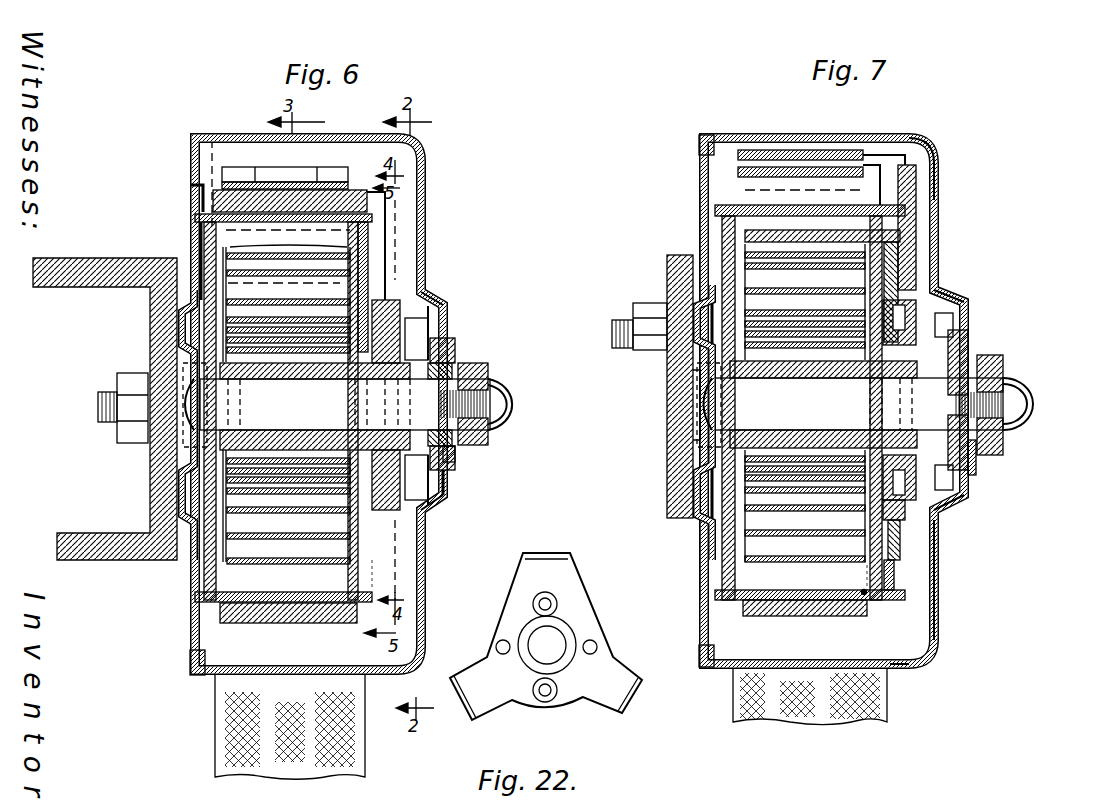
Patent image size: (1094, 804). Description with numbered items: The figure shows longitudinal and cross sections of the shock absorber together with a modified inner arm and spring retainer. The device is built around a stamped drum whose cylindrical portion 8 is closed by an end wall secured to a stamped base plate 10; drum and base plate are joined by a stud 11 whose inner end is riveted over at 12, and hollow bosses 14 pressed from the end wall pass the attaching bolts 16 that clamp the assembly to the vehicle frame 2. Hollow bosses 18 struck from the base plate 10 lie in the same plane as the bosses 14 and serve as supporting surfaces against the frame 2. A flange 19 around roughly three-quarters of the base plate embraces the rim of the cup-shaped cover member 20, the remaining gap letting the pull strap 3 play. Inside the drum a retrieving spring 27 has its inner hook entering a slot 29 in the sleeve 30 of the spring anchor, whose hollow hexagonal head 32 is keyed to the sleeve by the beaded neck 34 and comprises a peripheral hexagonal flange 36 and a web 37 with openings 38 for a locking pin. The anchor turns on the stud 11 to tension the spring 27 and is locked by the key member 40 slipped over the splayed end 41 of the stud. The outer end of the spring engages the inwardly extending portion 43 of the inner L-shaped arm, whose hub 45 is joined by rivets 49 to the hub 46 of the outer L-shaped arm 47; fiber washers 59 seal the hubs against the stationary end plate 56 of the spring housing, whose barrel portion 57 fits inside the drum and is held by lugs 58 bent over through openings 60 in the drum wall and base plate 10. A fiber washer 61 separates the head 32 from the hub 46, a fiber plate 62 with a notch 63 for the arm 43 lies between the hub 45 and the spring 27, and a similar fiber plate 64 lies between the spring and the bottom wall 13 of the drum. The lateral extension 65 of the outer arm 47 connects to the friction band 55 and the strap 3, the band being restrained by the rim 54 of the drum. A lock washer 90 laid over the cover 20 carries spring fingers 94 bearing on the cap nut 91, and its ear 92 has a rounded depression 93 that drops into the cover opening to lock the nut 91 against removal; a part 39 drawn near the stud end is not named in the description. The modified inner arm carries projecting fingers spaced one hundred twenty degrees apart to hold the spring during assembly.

In FIG. 6, the vehicle frame 2 is at (75, 287).
In FIG. 7, the vehicle frame 2 is at (672, 455).
In FIG. 6, the pull strap 3 is at (215, 725).
In FIG. 7, the pull strap 3 is at (805, 722).
In FIG. 7, the cylindrical portion 8 is at (907, 641).
In FIG. 6, the base plate 10 is at (186, 645).
In FIG. 7, the base plate 10 is at (705, 645).
In FIG. 6, the stud 11 is at (315, 406).
In FIG. 7, the stud 11 is at (823, 404).
In FIG. 6, the riveted-over end 12 is at (186, 372).
In FIG. 7, the riveted-over end 12 is at (703, 412).
In FIG. 6, the bottom wall 13 is at (205, 560).
In FIG. 7, the bottom wall 13 is at (720, 243).
In FIG. 6, the bosses 14 is at (186, 445).
In FIG. 7, the bosses 14 is at (710, 395).
In FIG. 6, the attaching bolts 16 is at (98, 405).
In FIG. 7, the attaching bolts 16 is at (612, 343).
In FIG. 6, the hollow bosses 18 is at (183, 320).
In FIG. 7, the hollow bosses 18 is at (700, 493).
In FIG. 6, the flange 19 is at (200, 675).
In FIG. 7, the flange 19 is at (722, 135).
In FIG. 7, the cover member 20 is at (885, 162).
In FIG. 6, the retrieving spring 27 is at (292, 548).
In FIG. 7, the retrieving spring 27 is at (912, 275).
In FIG. 7, the slot 29 is at (705, 383).
In FIG. 6, the sleeve 30 is at (283, 388).
In FIG. 7, the sleeve 30 is at (806, 383).
In FIG. 7, the hollow hexagonal head 32 is at (968, 315).
In FIG. 6, the beaded neck 34 is at (490, 365).
In FIG. 6, the peripheral hexagonal flange 36 is at (430, 330).
In FIG. 6, the web portion 37 is at (474, 399).
In FIG. 6, the openings 38 is at (400, 340).
In FIG. 6, the casing boss 39 is at (432, 508).
In FIG. 6, the key member 40 is at (492, 380).
In FIG. 7, the key member 40 is at (990, 350).
In FIG. 6, the splayed end 41 is at (490, 416).
In FIG. 7, the splayed end 41 is at (1005, 405).
In FIG. 7, the inwardly extending portion 43 is at (720, 232).
In FIG. 22, the inwardly extending portion 43 is at (540, 552).
In FIG. 7, the central hub 45 is at (945, 513).
In FIG. 7, the hub 46 is at (920, 527).
In FIG. 7, the outer L-shaped arm 47 is at (918, 182).
In FIG. 7, the rivets 49 is at (962, 492).
In FIG. 7, the flange or rim 54 is at (938, 610).
In FIG. 6, the friction band 55 is at (278, 623).
In FIG. 7, the friction band 55 is at (905, 590).
In FIG. 7, the end plate 56 is at (905, 565).
In FIG. 7, the barrel portion 57 is at (908, 664).
In FIG. 6, the lugs 58 is at (198, 217).
In FIG. 7, the fiber washers 59 is at (905, 245).
In FIG. 6, the openings 60 is at (196, 192).
In FIG. 6, the fiber washer 61 is at (420, 300).
In FIG. 7, the fiber washer 61 is at (965, 296).
In FIG. 6, the fiber plate 62 is at (372, 573).
In FIG. 7, the fiber plate 62 is at (870, 575).
In FIG. 7, the notch 63 is at (918, 212).
In FIG. 6, the fiber plate 64 is at (205, 240).
In FIG. 7, the fiber plate 64 is at (722, 538).
In FIG. 6, the lateral extension 65 is at (378, 196).
In FIG. 7, the lateral extension 65 is at (872, 165).
In FIG. 6, the lock washer 90 is at (452, 362).
In FIG. 6, the cap nut 91 is at (518, 400).
In FIG. 7, the cap nut 91 is at (1030, 390).
In FIG. 6, the ear 92 is at (455, 462).
In FIG. 7, the ear 92 is at (978, 472).
In FIG. 6, the rounded depression 93 is at (450, 480).
In FIG. 6, the spring fingers 94 is at (488, 452).
In FIG. 7, the spring fingers 94 is at (985, 450).